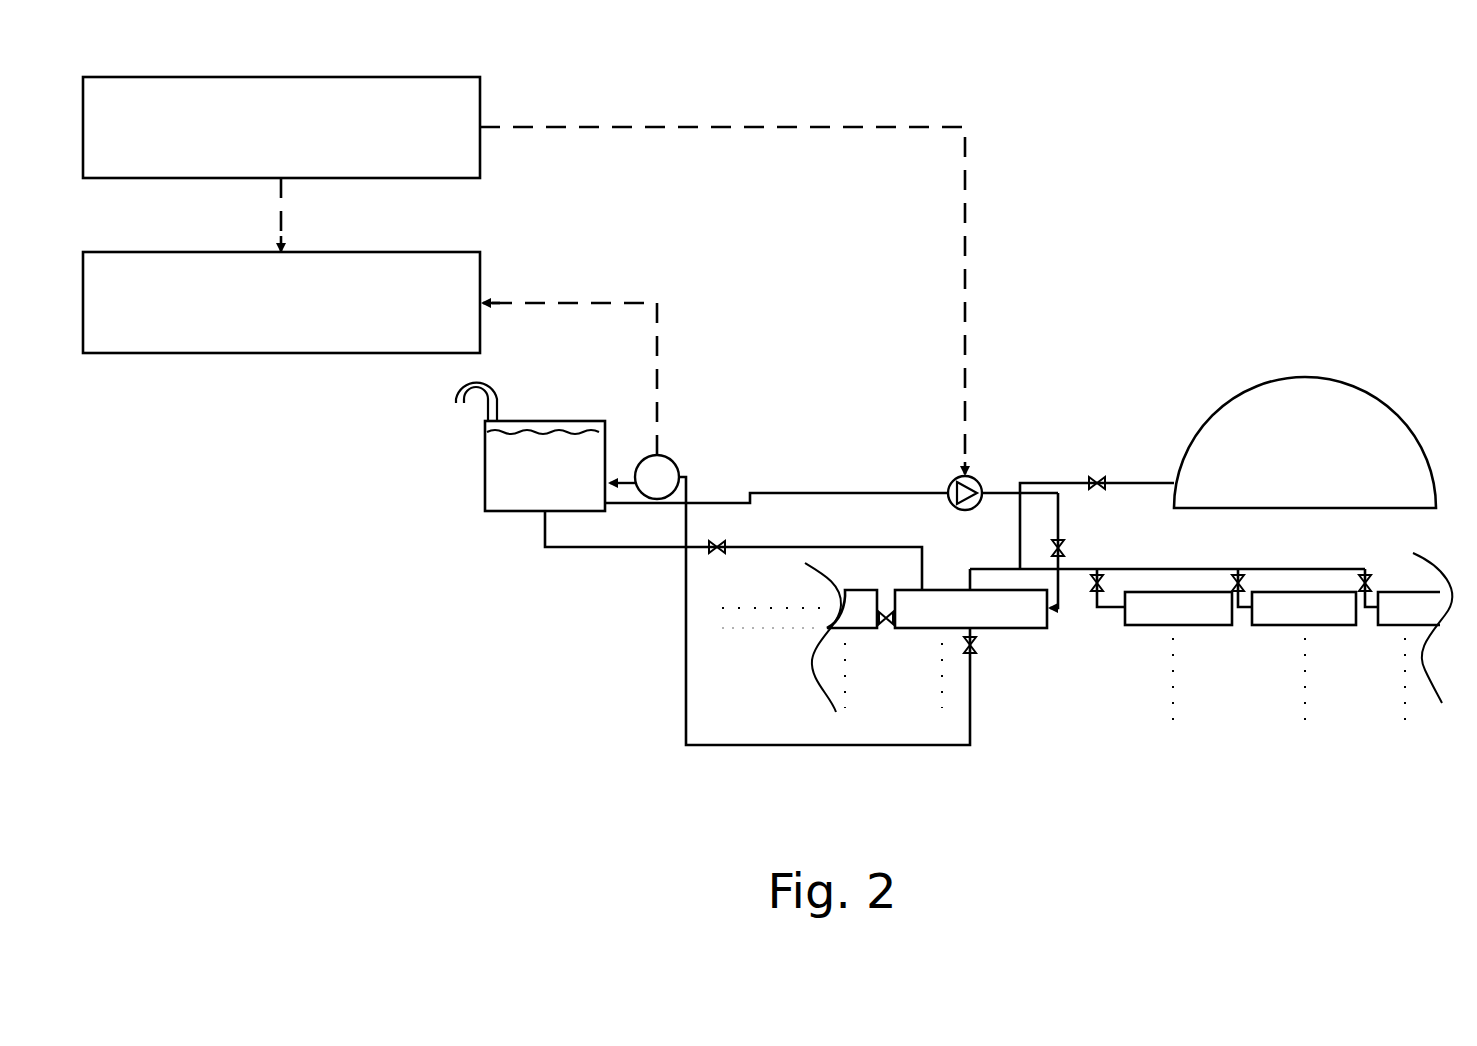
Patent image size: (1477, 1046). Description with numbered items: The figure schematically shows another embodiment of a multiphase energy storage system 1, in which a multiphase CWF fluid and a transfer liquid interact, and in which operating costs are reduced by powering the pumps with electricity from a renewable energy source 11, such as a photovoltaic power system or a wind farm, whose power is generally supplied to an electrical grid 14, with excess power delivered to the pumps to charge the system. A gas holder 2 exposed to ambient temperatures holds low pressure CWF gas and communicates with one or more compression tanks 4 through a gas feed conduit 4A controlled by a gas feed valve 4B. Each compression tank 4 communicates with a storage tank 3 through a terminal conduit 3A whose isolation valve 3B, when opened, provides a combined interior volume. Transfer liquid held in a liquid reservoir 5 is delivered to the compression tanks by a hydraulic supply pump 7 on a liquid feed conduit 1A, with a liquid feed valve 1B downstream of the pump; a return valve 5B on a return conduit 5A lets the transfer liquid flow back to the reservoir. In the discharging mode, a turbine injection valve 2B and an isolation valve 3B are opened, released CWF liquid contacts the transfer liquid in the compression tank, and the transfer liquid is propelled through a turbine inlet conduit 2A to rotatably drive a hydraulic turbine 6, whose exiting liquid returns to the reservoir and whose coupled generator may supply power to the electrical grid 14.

The multiphase energy storage system 1 is at (1135, 263).
The renewable energy source 11 is at (345, 72).
The electrical grid 14 is at (265, 355).
The gas holder 2 is at (1354, 373).
The liquid reservoir 5 is at (556, 402).
The hydraulic turbine 6 is at (668, 453).
The hydraulic supply pump 7 is at (946, 482).
The liquid feed conduit 1A is at (780, 493).
The gas feed conduit 4A is at (1075, 481).
The gas feed valve 4B is at (1106, 474).
The terminal conduit 3A is at (1185, 568).
The storage tank 3 is at (1216, 632).
The isolation valve 3B is at (1106, 604).
The liquid feed valve 1B is at (1066, 568).
The compression tank 4 is at (1009, 635).
The turbine injection valve 2B is at (979, 662).
The turbine inlet conduit 2A is at (685, 702).
The return conduit 5A is at (572, 550).
The return valve 5B is at (712, 553).